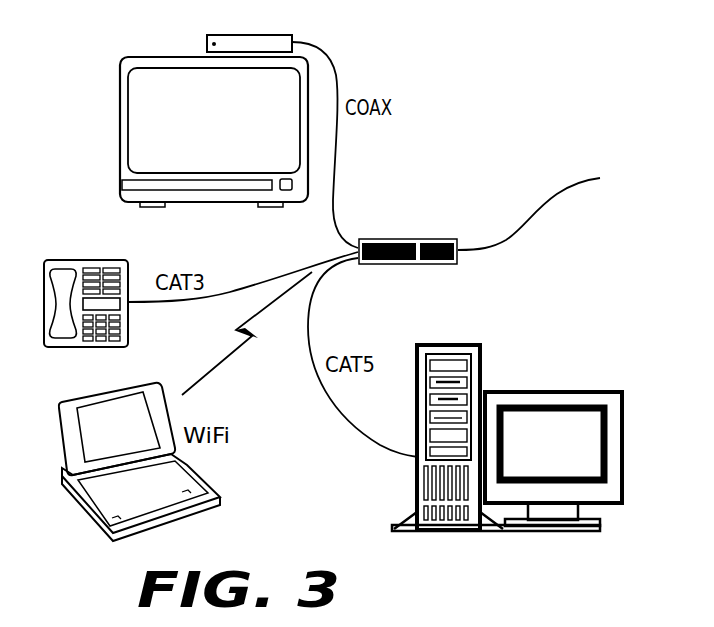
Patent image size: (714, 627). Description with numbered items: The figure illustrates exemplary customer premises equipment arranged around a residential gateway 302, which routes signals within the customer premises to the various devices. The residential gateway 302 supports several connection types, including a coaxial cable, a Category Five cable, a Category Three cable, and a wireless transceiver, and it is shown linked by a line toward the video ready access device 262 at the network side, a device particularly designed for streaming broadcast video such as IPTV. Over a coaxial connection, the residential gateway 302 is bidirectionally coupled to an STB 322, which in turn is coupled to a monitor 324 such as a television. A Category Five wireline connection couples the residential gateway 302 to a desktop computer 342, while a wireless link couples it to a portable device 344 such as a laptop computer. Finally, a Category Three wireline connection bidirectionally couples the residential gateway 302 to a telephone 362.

The residential gateway 302 is at (428, 239).
The STB 322 is at (207, 41).
The monitor 324 is at (120, 65).
The desktop computer 342 is at (620, 403).
The portable device 344 is at (62, 405).
The telephone 362 is at (44, 272).
The video ready access device 262 is at (556, 195).